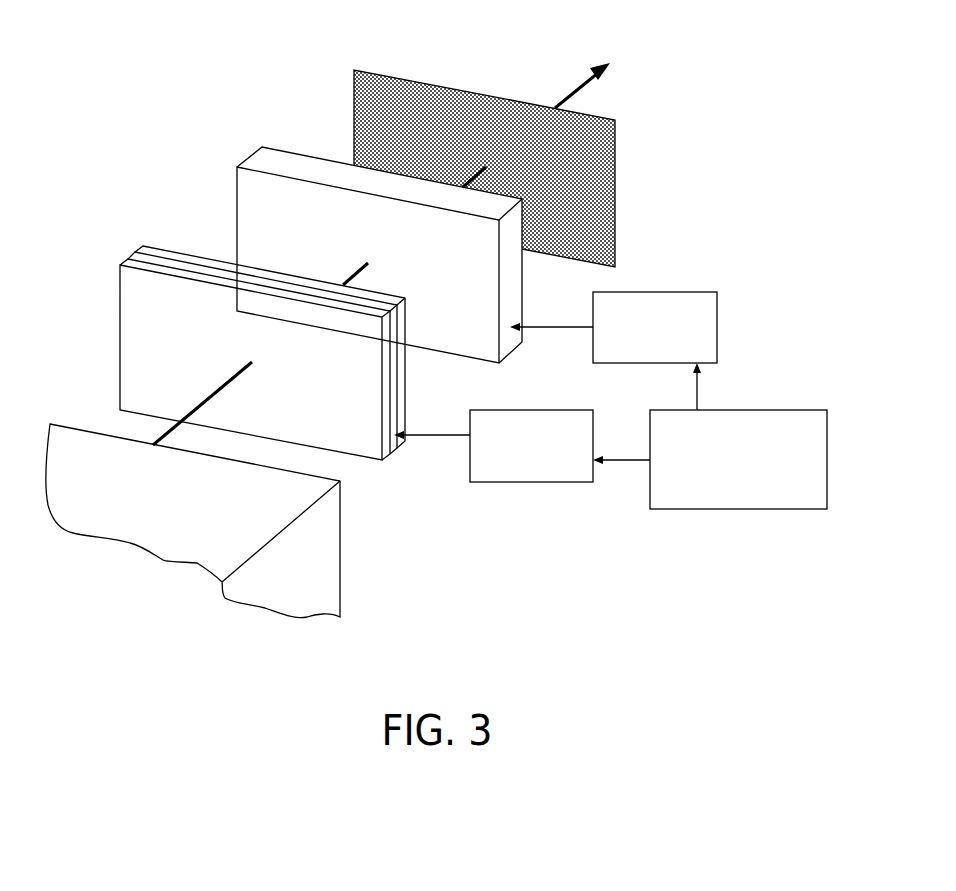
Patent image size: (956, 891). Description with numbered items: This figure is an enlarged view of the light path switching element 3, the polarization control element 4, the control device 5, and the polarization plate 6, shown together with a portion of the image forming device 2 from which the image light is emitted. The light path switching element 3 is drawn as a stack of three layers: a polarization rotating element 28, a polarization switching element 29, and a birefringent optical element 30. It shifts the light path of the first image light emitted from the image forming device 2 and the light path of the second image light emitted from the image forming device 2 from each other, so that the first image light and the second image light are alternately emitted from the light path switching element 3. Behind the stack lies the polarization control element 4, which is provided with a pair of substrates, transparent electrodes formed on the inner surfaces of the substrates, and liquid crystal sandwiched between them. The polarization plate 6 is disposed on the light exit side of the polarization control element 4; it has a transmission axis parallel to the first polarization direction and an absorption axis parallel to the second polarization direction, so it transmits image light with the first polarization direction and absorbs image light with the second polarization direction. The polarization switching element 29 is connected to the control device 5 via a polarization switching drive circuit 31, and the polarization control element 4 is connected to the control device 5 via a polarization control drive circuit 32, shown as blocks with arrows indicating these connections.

The image forming device 2 is at (342, 533).
The light path switching element 3 is at (241, 297).
The polarization rotating element 28 is at (122, 263).
The polarization switching element 29 is at (128, 258).
The birefringent optical element 30 is at (270, 312).
The polarization control element 4 is at (280, 150).
The polarization plate 6 is at (372, 70).
The control device 5 is at (785, 410).
The polarization switching drive circuit 31 is at (533, 483).
The polarization control drive circuit 32 is at (720, 328).